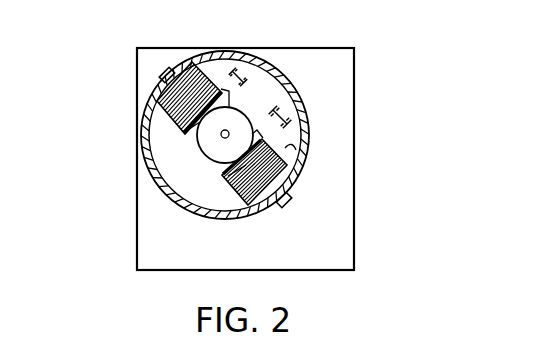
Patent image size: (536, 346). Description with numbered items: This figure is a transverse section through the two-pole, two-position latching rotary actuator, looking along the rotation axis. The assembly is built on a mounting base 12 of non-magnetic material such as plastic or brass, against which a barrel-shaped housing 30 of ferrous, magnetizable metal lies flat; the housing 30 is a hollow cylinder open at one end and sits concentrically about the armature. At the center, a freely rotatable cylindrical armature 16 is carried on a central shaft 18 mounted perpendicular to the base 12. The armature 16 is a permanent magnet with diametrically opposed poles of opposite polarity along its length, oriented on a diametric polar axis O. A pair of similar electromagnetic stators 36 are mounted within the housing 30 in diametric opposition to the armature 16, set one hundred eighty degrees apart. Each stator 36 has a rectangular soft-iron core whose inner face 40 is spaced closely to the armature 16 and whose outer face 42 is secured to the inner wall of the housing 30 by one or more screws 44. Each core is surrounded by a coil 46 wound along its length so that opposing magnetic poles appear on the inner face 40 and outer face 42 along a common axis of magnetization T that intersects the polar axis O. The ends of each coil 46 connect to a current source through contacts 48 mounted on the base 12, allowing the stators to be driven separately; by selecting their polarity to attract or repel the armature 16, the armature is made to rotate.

The mounting base 12 is at (355, 228).
The cylindrical armature 16 is at (229, 132).
The central shaft 18 is at (221, 134).
The barrel-shaped housing 30 is at (305, 134).
The electromagnetic stator 36 is at (210, 73).
The inner face 40 is at (223, 166).
The outer face 42 is at (162, 95).
The screw 44 is at (292, 195).
The coil 46 is at (287, 148).
The contact 48 is at (232, 84).
The axis of magnetization T is at (152, 62).
The diametric polar axis O is at (223, 137).